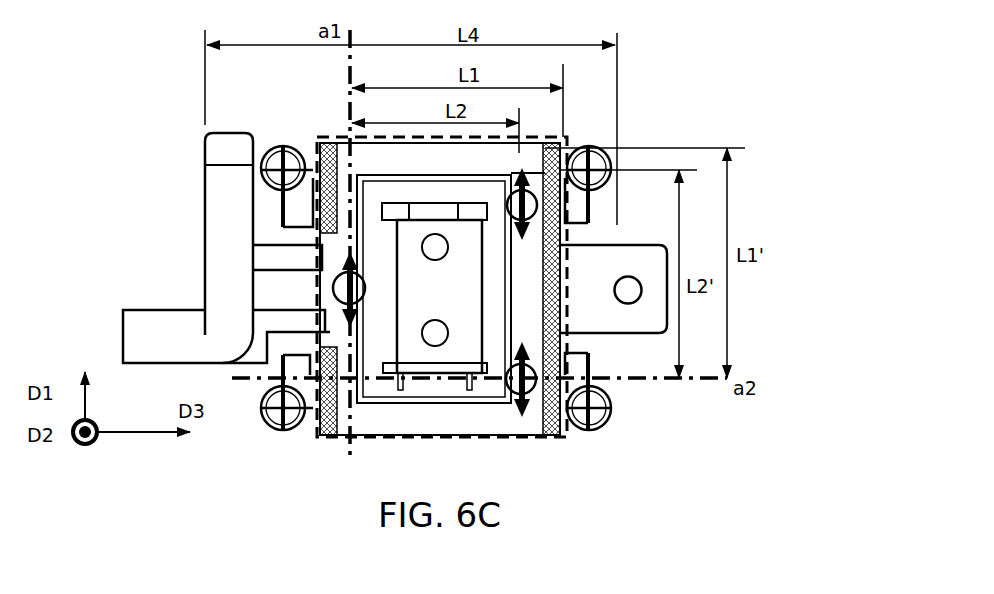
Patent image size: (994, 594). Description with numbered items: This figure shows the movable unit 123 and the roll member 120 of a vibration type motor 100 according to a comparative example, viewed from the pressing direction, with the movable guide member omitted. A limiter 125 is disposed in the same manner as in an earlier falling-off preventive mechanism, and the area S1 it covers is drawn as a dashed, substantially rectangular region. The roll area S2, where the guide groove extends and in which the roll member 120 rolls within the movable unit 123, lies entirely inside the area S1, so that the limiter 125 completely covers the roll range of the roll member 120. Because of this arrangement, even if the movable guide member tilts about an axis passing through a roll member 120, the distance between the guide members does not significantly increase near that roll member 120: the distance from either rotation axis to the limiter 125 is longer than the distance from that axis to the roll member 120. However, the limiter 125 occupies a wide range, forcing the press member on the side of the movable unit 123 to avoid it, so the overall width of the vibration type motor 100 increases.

The vibration type motor 100 is at (823, 66).
The roll member 120 is at (362, 282).
The movable unit 123 is at (168, 93).
The limiter 125 is at (325, 397).
The area covered with the limiter S1 is at (328, 137).
The roll area S2 is at (515, 400).